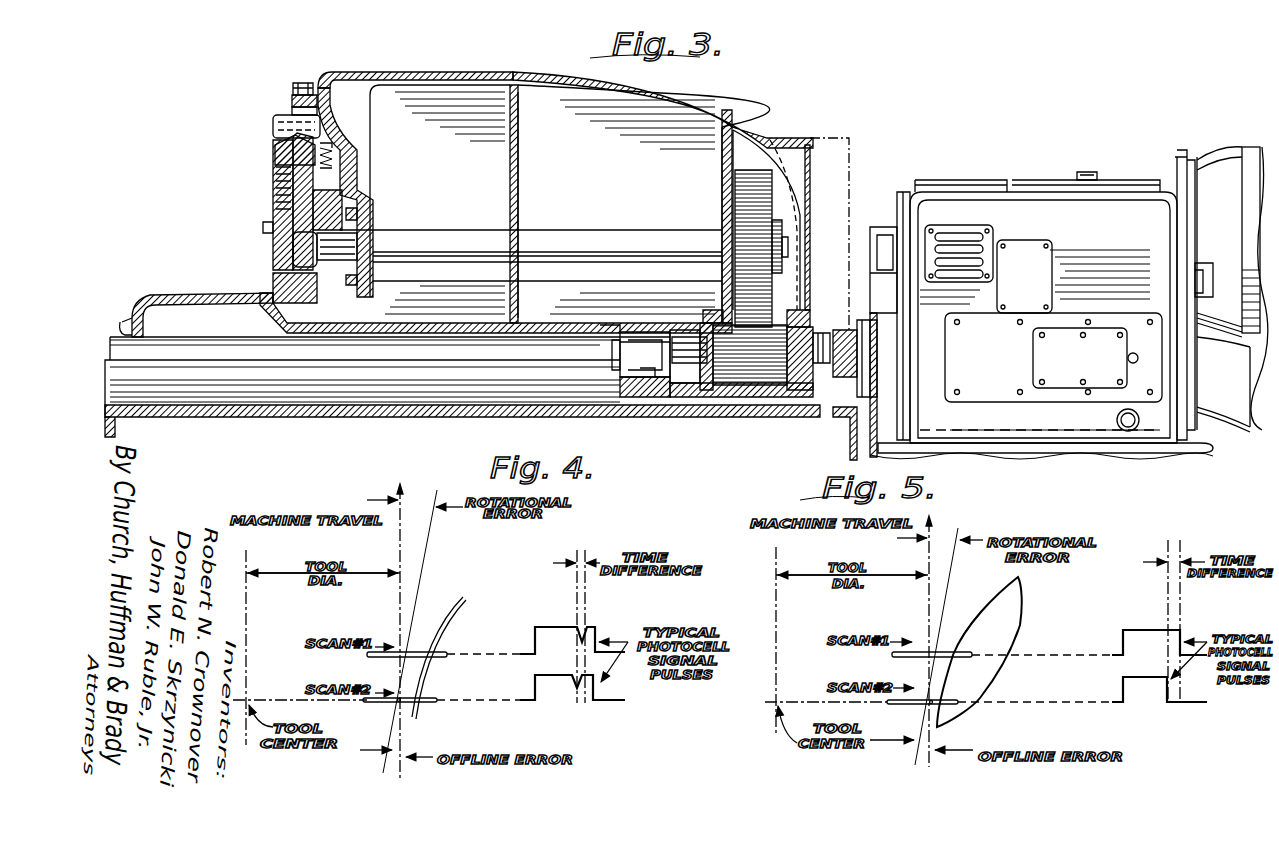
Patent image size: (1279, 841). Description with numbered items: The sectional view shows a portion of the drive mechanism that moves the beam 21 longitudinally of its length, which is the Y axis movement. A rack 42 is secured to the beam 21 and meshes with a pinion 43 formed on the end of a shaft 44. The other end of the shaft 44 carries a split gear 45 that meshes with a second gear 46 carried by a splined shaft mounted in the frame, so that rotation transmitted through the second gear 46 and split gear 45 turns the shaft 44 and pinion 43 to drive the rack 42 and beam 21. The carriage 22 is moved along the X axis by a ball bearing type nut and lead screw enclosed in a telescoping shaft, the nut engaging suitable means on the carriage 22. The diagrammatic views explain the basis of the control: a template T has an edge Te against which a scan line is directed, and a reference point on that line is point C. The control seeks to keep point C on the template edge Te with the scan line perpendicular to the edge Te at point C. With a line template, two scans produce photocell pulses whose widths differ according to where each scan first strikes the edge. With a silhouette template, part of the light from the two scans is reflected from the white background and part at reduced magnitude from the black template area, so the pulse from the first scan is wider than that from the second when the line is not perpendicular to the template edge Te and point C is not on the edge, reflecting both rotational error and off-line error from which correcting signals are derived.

In FIG. 3, the beam 21 is at (290, 232).
In FIG. 3, the carriage 22 is at (692, 92).
In FIG. 3, the rack 42 is at (362, 228).
In FIG. 3, the pinion 43 is at (300, 262).
In FIG. 3, the shaft 44 is at (650, 235).
In FIG. 3, the split gear 45 is at (745, 170).
In FIG. 3, the second gear 46 is at (760, 375).
In FIG. 4, the reference point C is at (398, 701).
In FIG. 5, the reference point C is at (932, 702).
In FIG. 5, the template T is at (1003, 622).
In FIG. 5, the template edge Te is at (973, 622).